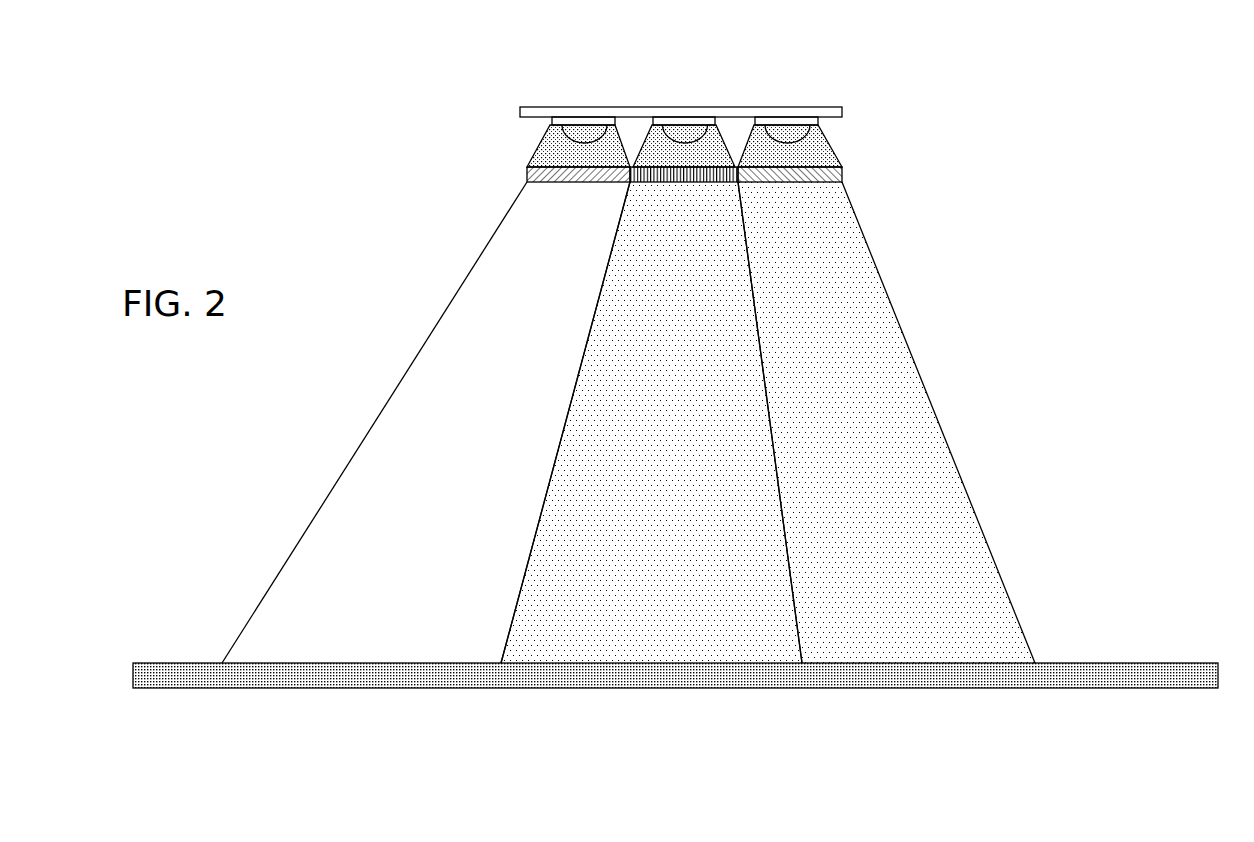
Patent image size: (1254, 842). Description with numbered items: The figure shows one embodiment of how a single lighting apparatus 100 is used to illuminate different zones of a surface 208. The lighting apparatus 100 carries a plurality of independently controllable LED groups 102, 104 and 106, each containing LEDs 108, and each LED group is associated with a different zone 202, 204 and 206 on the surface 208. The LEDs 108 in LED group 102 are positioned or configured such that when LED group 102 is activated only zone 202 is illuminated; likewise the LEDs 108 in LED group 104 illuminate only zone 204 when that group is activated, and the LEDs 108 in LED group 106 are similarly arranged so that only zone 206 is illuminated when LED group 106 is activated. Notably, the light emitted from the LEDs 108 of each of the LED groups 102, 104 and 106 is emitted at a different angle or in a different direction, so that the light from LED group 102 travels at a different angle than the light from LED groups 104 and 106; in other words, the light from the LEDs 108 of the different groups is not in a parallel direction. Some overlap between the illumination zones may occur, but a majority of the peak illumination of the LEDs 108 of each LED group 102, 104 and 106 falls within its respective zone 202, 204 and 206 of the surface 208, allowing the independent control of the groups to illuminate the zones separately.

The lighting apparatus 100 is at (512, 88).
The LED group 102 is at (567, 113).
The LED group 104 is at (668, 113).
The LED group 106 is at (773, 113).
The LEDs 108 is at (583, 135).
The zone 202 is at (313, 711).
The zone 204 is at (659, 709).
The zone 206 is at (980, 709).
The surface 208 is at (1095, 646).